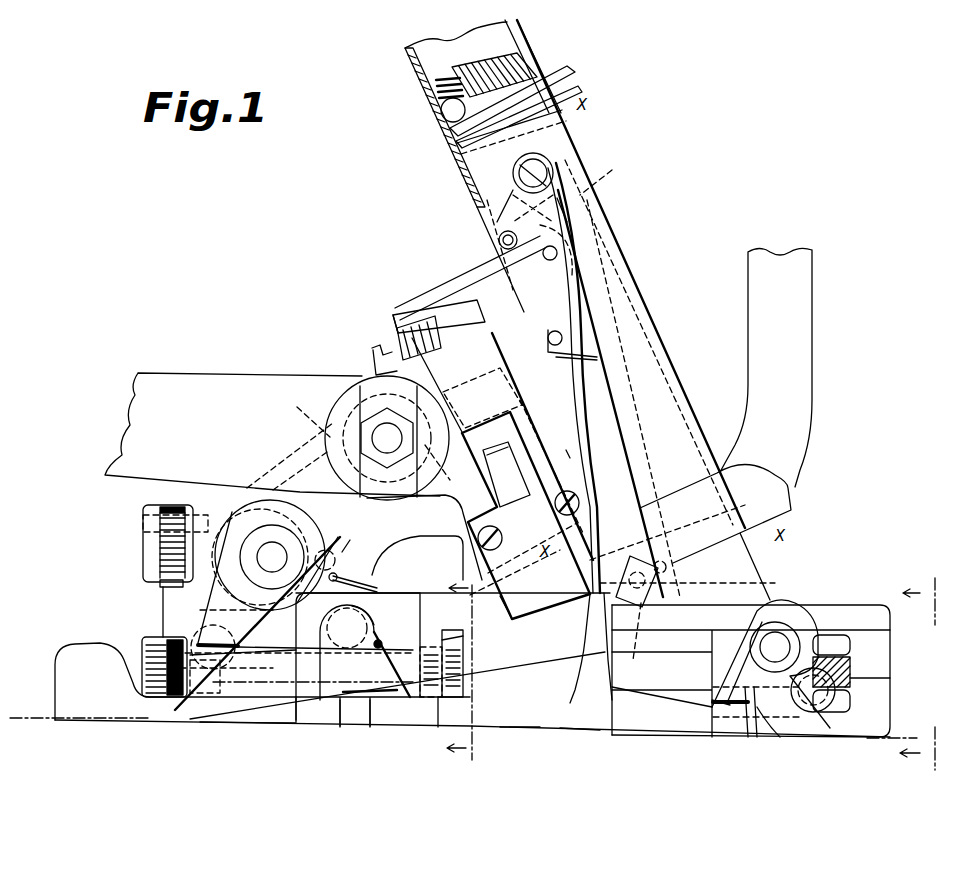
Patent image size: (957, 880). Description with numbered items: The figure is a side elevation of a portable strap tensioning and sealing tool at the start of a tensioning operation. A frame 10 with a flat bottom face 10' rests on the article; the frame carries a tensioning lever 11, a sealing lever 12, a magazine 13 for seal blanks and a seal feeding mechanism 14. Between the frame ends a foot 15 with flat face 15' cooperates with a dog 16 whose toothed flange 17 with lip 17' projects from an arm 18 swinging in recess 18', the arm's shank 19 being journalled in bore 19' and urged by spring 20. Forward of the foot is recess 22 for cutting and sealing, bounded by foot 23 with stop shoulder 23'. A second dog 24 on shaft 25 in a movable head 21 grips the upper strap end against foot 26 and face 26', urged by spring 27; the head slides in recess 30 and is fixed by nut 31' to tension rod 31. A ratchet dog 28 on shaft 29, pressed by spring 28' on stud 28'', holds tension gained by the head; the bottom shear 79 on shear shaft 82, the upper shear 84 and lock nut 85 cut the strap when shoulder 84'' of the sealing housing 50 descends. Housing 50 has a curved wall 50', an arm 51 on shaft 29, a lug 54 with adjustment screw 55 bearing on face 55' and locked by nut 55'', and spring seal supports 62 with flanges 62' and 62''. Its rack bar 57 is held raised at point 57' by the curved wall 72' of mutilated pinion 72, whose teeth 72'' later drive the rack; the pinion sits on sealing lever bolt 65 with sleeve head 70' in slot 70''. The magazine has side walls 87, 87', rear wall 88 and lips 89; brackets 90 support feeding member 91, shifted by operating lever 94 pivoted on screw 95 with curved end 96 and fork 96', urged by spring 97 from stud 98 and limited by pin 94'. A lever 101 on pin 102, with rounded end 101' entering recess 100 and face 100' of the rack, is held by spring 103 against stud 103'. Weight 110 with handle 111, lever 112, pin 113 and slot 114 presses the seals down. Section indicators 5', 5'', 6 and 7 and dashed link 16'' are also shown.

The section line 5' is at (80, 698).
The section line 5'' is at (883, 756).
The section line 6- 6 is at (444, 666).
The section line 7- 7 is at (910, 676).
The frame 10 is at (472, 533).
The flat bottom face 10' is at (248, 739).
The tensioning lever 11 is at (812, 318).
The sealing lever 12 is at (222, 384).
The magazine 13 is at (398, 51).
The seal feeding mechanism 14 is at (630, 454).
The foot 15 is at (308, 724).
The strap supporting face 15' is at (411, 726).
The dog 16 is at (353, 618).
The pin 16'' is at (369, 576).
The flange 17 is at (375, 727).
The lip 17' is at (342, 727).
The arm 18 is at (356, 656).
The recess 18' is at (245, 664).
The cylindrical shank 19 is at (366, 628).
The bore 19' is at (378, 609).
The spring 20 is at (382, 644).
The movable head 21 is at (800, 728).
The recess 22 is at (520, 728).
The foot 23 is at (609, 689).
The shoulder 23' is at (580, 747).
The second dog 24 is at (748, 738).
The supporting shaft 25 is at (780, 632).
The foot 26 is at (770, 743).
The strap supporting face 26' is at (706, 734).
The spring / frame projection 27 is at (241, 644).
The dog 28 is at (257, 605).
The spring 28' is at (361, 553).
The stud 28'' is at (334, 550).
The shaft 29 is at (287, 553).
The recess 30 is at (883, 705).
The tension rod 31 is at (849, 676).
The nut 31' is at (831, 634).
The sealing head or housing 50 is at (373, 362).
The curved wall 50' is at (553, 440).
The arm 51 is at (350, 540).
The lug 54 is at (143, 548).
The adjustment screw 55 is at (150, 498).
The face 55' is at (149, 600).
The nut 55'' is at (155, 524).
The rack bar 57 is at (366, 344).
The point 57' is at (513, 450).
The spring seal supports 62 is at (526, 515).
The bottom flanges 62' is at (585, 648).
The end flanges 62'' is at (499, 616).
The sealing lever bolt 65 is at (377, 437).
The T-shaped head 70' is at (332, 440).
The slot 70'' is at (314, 473).
The mutilated pinion 72 is at (424, 537).
The curved wall 72' is at (449, 472).
The teeth 72'' is at (298, 415).
The bottom shear 79 is at (433, 645).
The shear shaft 82 is at (142, 693).
The upper shear 84 is at (463, 672).
The shoulder 84'' is at (417, 558).
The nut 85 is at (150, 645).
The side wall 87 is at (631, 274).
The side wall 87' is at (456, 27).
The rear wall 88 is at (455, 180).
The lips 89 is at (608, 174).
The brackets 90 is at (790, 493).
The seal feeding member 91 is at (672, 568).
The operating lever 94 is at (597, 378).
The pin 94' is at (682, 543).
The screw 95 is at (553, 170).
The curved lower end 96 is at (659, 588).
The forked portion 96' is at (636, 637).
The spring 97 is at (557, 251).
The stud 98 is at (498, 240).
The recess 100 is at (502, 446).
The rounded face 100' is at (423, 347).
The lever 101 is at (439, 293).
The rounded end 101' is at (363, 318).
The pin 102 is at (575, 236).
The spring 103 is at (470, 278).
The fixed stud 103' is at (595, 346).
The weight 110 is at (525, 50).
The handle 111 is at (583, 88).
The pivoted lever 112 is at (575, 68).
The pin 113 is at (460, 118).
The slot 114 is at (538, 76).